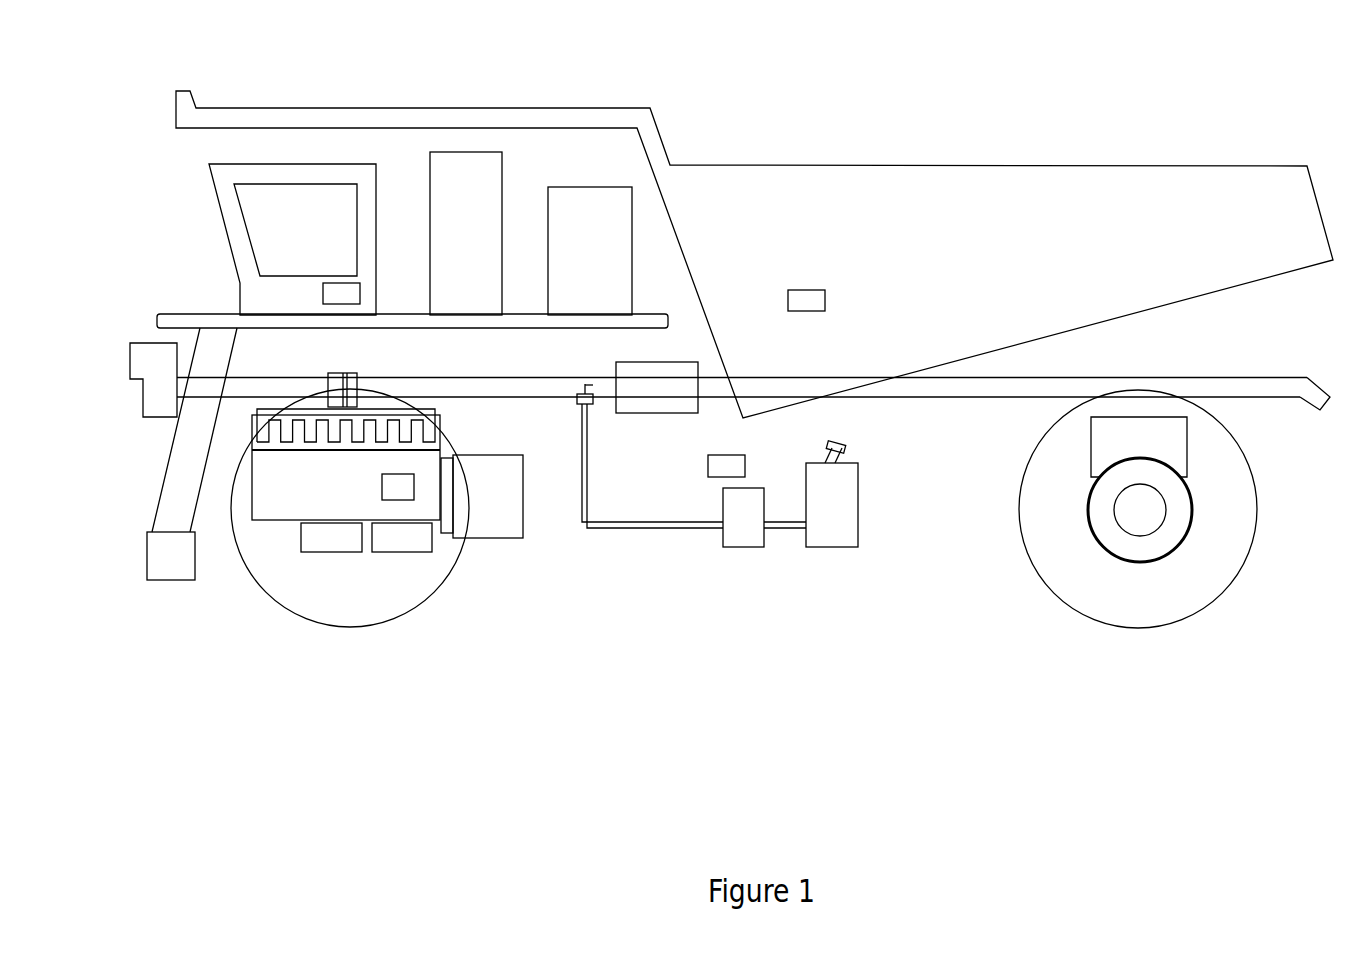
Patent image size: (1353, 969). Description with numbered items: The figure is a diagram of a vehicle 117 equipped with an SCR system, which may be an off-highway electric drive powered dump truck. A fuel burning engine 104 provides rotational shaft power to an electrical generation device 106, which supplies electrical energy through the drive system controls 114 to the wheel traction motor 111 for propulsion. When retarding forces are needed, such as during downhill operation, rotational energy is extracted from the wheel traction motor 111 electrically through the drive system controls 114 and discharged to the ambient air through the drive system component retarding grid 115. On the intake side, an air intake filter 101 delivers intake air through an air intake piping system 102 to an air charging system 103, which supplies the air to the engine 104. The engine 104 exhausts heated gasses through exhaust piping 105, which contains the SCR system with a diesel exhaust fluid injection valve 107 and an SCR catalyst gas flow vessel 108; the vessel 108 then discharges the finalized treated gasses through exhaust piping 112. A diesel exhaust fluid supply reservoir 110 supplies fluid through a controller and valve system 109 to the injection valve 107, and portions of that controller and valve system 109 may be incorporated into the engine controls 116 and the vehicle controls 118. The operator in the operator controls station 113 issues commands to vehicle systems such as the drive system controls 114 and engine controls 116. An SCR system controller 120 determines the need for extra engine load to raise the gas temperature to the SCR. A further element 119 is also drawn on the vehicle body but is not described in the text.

The air intake filter 101 is at (149, 354).
The air intake piping system 102 is at (263, 387).
The air charging system 103 is at (337, 372).
The fuel burning engine 104 is at (282, 510).
The exhaust piping 105 is at (455, 388).
The electrical generation device 106 is at (502, 465).
The diesel exhaust fluid injection valve 107 is at (583, 392).
The SCR catalyst gas flow vessel 108 is at (677, 405).
The controller and valve system 109 is at (745, 541).
The diesel exhaust fluid supply reservoir 110 is at (842, 541).
The wheel traction motor 111 is at (1143, 548).
The exhaust piping 112 is at (1255, 385).
The operator controls station 113 is at (282, 173).
The drive system controls 114 is at (467, 173).
The drive system component retarding grid 115 is at (590, 203).
The engine controls 116 is at (395, 486).
The vehicle 117 is at (553, 775).
The vehicle controls 118 is at (337, 289).
The bed sensor 119 is at (800, 298).
The SCR system controller 120 is at (722, 465).